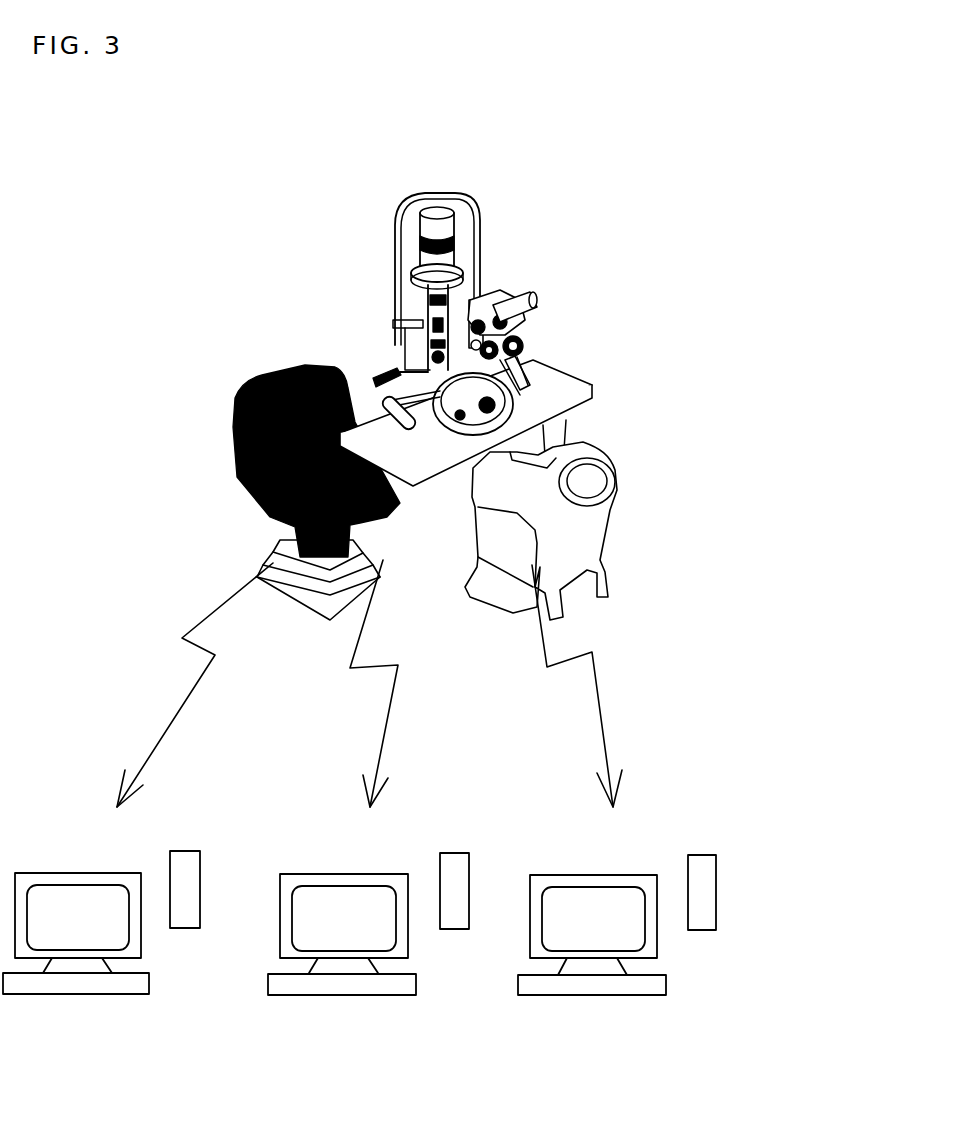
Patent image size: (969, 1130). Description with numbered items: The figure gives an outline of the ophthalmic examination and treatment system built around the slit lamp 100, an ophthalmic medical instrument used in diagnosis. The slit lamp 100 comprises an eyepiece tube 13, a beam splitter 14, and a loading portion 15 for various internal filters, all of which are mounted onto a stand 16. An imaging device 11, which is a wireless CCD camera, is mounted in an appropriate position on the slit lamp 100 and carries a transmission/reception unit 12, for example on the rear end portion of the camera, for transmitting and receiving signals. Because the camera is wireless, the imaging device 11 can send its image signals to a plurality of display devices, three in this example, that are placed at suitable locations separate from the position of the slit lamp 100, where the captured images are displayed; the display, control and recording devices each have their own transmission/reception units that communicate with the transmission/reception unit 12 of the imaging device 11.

The slit lamp 100 is at (330, 231).
The imaging device 11 is at (510, 333).
The transmission/reception unit 12 is at (530, 300).
The eyepiece tube 13 is at (522, 338).
The beam splitter 14 is at (437, 360).
The loading portion 15 is at (477, 212).
The stand 16 is at (478, 300).